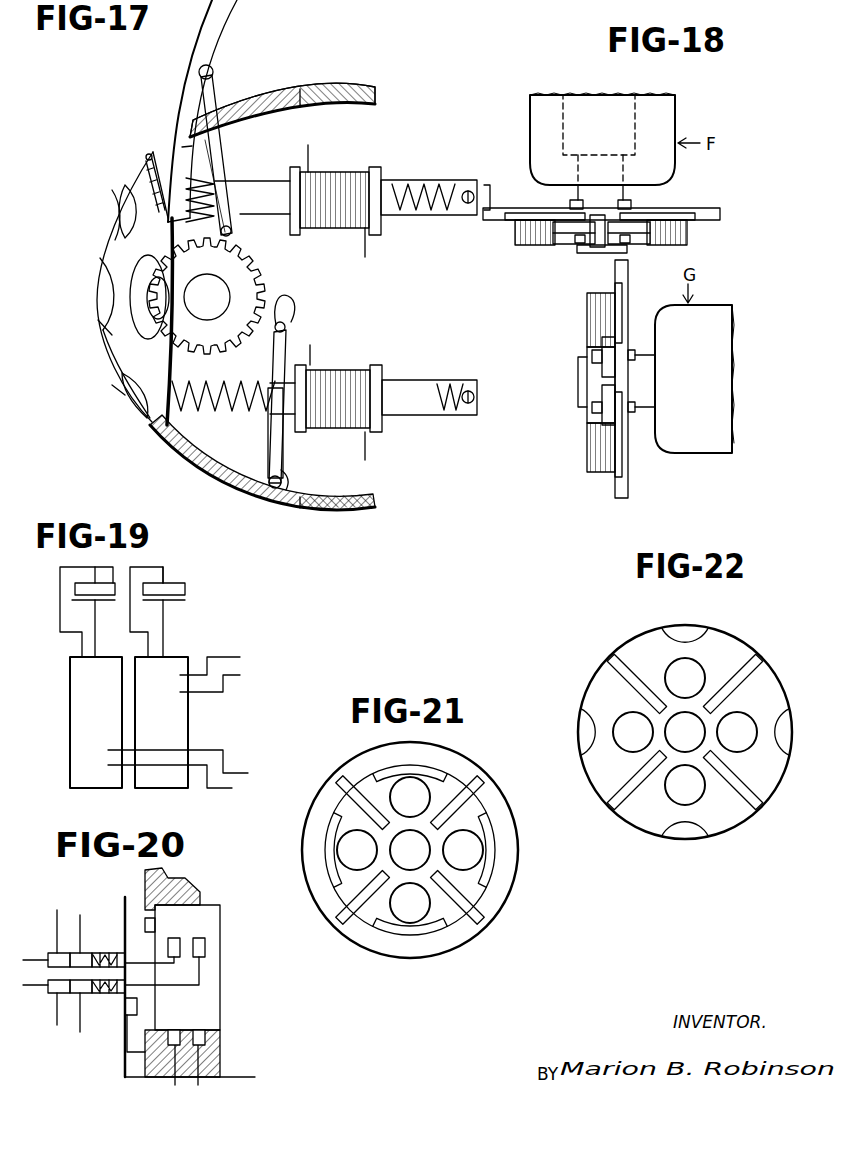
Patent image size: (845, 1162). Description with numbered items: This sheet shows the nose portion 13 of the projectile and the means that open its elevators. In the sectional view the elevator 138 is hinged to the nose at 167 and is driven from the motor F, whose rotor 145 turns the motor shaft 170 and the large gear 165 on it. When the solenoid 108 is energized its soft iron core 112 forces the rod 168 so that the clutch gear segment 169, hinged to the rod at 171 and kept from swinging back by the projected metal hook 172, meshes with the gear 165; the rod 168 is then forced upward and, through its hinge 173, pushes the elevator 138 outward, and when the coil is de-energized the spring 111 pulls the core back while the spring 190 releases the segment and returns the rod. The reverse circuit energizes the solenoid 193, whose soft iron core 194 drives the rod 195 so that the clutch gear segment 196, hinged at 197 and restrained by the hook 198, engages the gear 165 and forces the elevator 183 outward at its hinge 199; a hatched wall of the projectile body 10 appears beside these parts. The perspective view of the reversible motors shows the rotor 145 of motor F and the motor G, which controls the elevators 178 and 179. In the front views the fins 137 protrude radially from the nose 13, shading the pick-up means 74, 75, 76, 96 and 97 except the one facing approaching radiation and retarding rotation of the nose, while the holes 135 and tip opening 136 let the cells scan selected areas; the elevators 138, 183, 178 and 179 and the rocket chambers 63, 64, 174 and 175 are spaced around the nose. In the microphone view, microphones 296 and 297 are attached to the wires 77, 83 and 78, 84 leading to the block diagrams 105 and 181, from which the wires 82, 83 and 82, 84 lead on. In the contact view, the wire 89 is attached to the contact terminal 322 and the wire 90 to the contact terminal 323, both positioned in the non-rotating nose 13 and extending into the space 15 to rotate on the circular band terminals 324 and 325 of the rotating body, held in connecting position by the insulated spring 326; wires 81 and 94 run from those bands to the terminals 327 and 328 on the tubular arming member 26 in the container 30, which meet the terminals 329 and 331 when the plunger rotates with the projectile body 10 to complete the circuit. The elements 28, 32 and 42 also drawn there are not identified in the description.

In FIG. 17, the projectile body 10 is at (330, 92).
In FIG. 17, the nose portion 13 is at (108, 355).
In FIG. 21, the nose portion 13 is at (490, 785).
In FIG. 22, the nose portion 13 is at (612, 702).
In FIG. 20, the space 15 is at (75, 912).
In FIG. 20, the tubular arming member 26 is at (200, 945).
In FIG. 20, the stop 28 is at (145, 925).
In FIG. 20, the container 30 is at (218, 1015).
In FIG. 20, the stop member 32 is at (127, 1008).
In FIG. 20, the base plate 42 is at (125, 1063).
In FIG. 22, the rocket chamber 63 is at (700, 632).
In FIG. 22, the rocket chamber 64 is at (688, 835).
In FIG. 17, the photo-electric cell 74 is at (130, 200).
In FIG. 21, the photo-electric cell 74 is at (415, 795).
In FIG. 22, the photo-electric cell 74 is at (692, 678).
In FIG. 17, the photo-electric cell 75 is at (105, 297).
In FIG. 21, the photo-electric cell 75 is at (408, 848).
In FIG. 22, the photo-electric cell 75 is at (685, 742).
In FIG. 17, the photo-electric cell 76 is at (120, 392).
In FIG. 21, the photo-electric cell 76 is at (412, 905).
In FIG. 22, the photo-electric cell 76 is at (700, 783).
In FIG. 19, the wire 77 is at (58, 600).
In FIG. 19, the wire 78 is at (150, 565).
In FIG. 20, the wire 81 is at (218, 990).
In FIG. 17, the wire 82 is at (365, 250).
In FIG. 19, the wire 82 is at (232, 680).
In FIG. 17, the wire 83 is at (308, 148).
In FIG. 19, the wire 83 is at (95, 612).
In FIG. 17, the wire 84 is at (365, 445).
In FIG. 19, the wire 84 is at (168, 625).
In FIG. 20, the common wire 89 is at (37, 958).
In FIG. 20, the wire 90 is at (38, 995).
In FIG. 20, the common conductor wire 94 is at (165, 970).
In FIG. 21, the pick-up means 96 is at (468, 848).
In FIG. 22, the pick-up means 96 is at (740, 728).
In FIG. 21, the pick-up means 97 is at (350, 845).
In FIG. 22, the pick-up means 97 is at (633, 742).
In FIG. 19, the block diagram 105 is at (80, 683).
In FIG. 17, the solenoid 108 is at (340, 182).
In FIG. 17, the spring 111 is at (428, 188).
In FIG. 17, the soft iron core 112 is at (240, 183).
In FIG. 17, the holes 135 is at (115, 222).
In FIG. 17, the hole 136 is at (102, 320).
In FIG. 21, the fins 137 is at (462, 790).
In FIG. 22, the fins 137 is at (612, 655).
In FIG. 17, the elevator 138 is at (173, 113).
In FIG. 21, the elevator 138 is at (430, 758).
In FIG. 18, the rotor 145 is at (612, 105).
In FIG. 17, the large gear 165 is at (240, 287).
In FIG. 18, the large gear 165 is at (515, 232).
In FIG. 17, the hinge 167 is at (152, 160).
In FIG. 21, the hinge 167 is at (385, 752).
In FIG. 17, the rod 168 is at (213, 148).
In FIG. 18, the rod 168 is at (505, 212).
In FIG. 17, the clutch gear segment 169 is at (235, 232).
In FIG. 18, the clutch gear segment 169 is at (558, 232).
In FIG. 17, the motor shaft 170 is at (200, 305).
In FIG. 18, the motor shaft 170 is at (610, 190).
In FIG. 17, the hinge 171 is at (207, 287).
In FIG. 18, the hinge 171 is at (578, 240).
In FIG. 17, the projected metal hook 172 is at (230, 200).
In FIG. 18, the projected metal hook 172 is at (556, 212).
In FIG. 17, the hinge 173 is at (212, 70).
In FIG. 22, the rocket chamber 174 is at (786, 735).
In FIG. 22, the rocket chamber 175 is at (586, 735).
In FIG. 21, the elevator 178 is at (505, 860).
In FIG. 21, the elevator 179 is at (318, 838).
In FIG. 19, the block diagram 181 is at (172, 665).
In FIG. 17, the elevator 183 is at (210, 478).
In FIG. 21, the elevator 183 is at (415, 945).
In FIG. 17, the spring 190 is at (168, 238).
In FIG. 17, the solenoid 193 is at (335, 382).
In FIG. 17, the soft iron core 194 is at (400, 385).
In FIG. 17, the rod 195 is at (280, 440).
In FIG. 17, the clutch gear segment 196 is at (290, 300).
In FIG. 18, the clutch gear segment 196 is at (642, 228).
In FIG. 17, the hinge 197 is at (286, 327).
In FIG. 18, the hinge 197 is at (619, 371).
In FIG. 17, the projected metal hook 198 is at (285, 352).
In FIG. 18, the projected metal hook 198 is at (660, 212).
In FIG. 17, the hinge 199 is at (268, 478).
In FIG. 19, the microphone 296 is at (103, 583).
In FIG. 19, the microphone 297 is at (172, 583).
In FIG. 20, the contact terminal 322 is at (62, 958).
In FIG. 20, the contact terminal 323 is at (62, 990).
In FIG. 20, the contact terminal 324 is at (84, 957).
In FIG. 20, the contact terminal 325 is at (86, 990).
In FIG. 20, the spring 326 is at (108, 953).
In FIG. 20, the contact terminal 327 is at (173, 955).
In FIG. 20, the contact terminal 328 is at (200, 938).
In FIG. 20, the contact terminal 329 is at (170, 1055).
In FIG. 20, the contact terminal 331 is at (215, 1058).